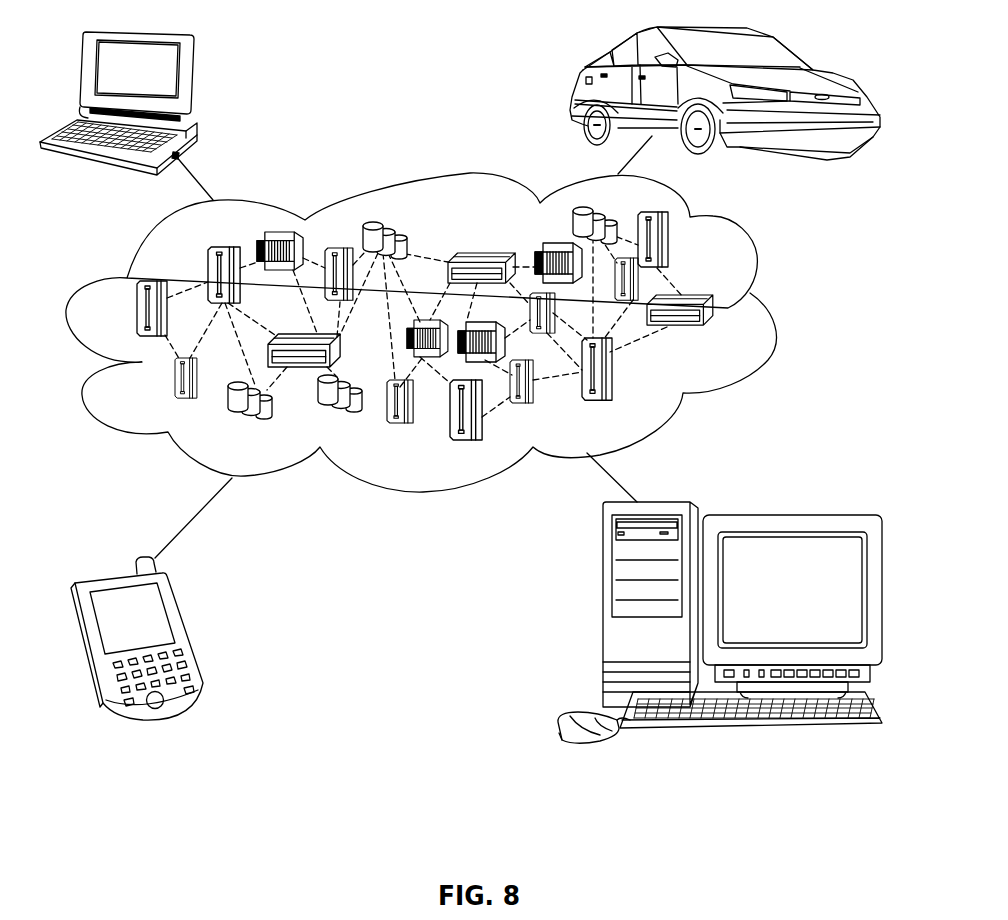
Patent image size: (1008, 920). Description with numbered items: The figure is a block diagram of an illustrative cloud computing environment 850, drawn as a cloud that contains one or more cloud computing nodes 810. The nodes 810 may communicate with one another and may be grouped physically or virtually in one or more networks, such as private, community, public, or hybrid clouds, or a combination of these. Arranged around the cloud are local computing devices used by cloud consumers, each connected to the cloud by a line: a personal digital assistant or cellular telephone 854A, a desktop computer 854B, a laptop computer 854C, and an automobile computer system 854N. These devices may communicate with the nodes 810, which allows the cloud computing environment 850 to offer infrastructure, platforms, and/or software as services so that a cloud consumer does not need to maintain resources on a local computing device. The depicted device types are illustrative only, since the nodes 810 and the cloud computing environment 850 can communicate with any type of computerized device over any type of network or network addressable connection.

The cloud computing nodes 810 is at (461, 385).
The cloud computing environment 850 is at (758, 272).
The personal digital assistant (PDA) or cellular telephone 854A is at (185, 635).
The desktop computer 854B is at (603, 612).
The laptop computer 854C is at (192, 78).
The automobile computer system 854N is at (577, 83).